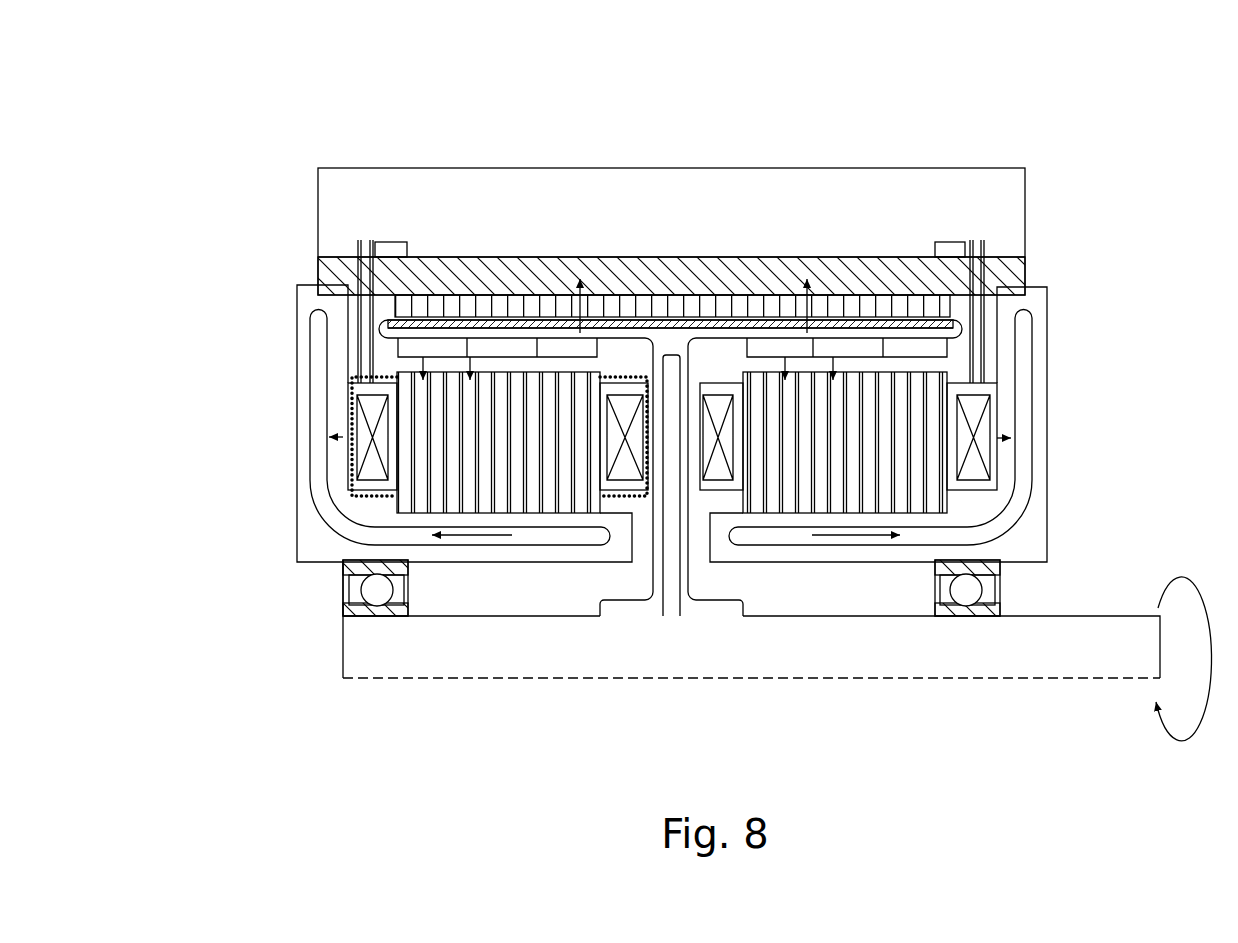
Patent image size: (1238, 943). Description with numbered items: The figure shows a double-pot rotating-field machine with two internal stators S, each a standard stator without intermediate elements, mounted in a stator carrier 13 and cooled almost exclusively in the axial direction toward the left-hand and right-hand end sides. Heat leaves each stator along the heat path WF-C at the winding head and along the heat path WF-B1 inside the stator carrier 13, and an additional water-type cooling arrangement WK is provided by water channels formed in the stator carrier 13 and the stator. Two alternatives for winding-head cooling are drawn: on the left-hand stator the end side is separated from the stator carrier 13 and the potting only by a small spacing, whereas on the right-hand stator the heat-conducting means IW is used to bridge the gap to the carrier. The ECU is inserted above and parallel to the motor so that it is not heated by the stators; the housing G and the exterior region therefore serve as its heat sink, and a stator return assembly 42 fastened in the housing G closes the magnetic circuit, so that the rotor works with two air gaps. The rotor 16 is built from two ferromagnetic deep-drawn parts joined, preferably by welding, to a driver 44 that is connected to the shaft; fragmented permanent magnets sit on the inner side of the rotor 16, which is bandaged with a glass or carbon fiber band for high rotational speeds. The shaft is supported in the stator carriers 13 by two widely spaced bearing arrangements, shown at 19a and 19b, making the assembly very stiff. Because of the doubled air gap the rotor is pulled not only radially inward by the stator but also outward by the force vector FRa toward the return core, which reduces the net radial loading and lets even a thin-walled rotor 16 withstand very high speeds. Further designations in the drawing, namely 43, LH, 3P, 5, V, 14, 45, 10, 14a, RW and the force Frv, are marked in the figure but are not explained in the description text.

The element ECU is at (875, 210).
The stator return assembly 42 is at (635, 300).
The housing G is at (545, 350).
The connection lines 43 is at (370, 270).
The connector / line holder LH is at (400, 252).
The three-phase (six-phase) connection 3P is at (672, 219).
The stator carrier 13 is at (302, 370).
The water-type cooling arrangement WK is at (288, 310).
The heat path in the stator carrier WF-B1 is at (475, 533).
The internal stator S is at (684, 565).
The stator core 5 is at (440, 467).
The heat path at the winding head WF-C is at (344, 440).
The insulation / potting V is at (628, 377).
The rotor 14 is at (560, 348).
The driver 44 is at (683, 330).
The rotor magnet carrier 45 is at (745, 345).
The rotor poles 10 is at (443, 348).
The rotor sleeve 14a is at (655, 520).
The rotor 16 is at (720, 603).
The rotor shaft RW is at (613, 660).
The first bearing 19a is at (360, 610).
The second bearing 19b is at (983, 607).
The heat-conducting means IW is at (993, 423).
The radial force toward the return core FRa is at (718, 277).
The reaction force Frv is at (1067, 352).